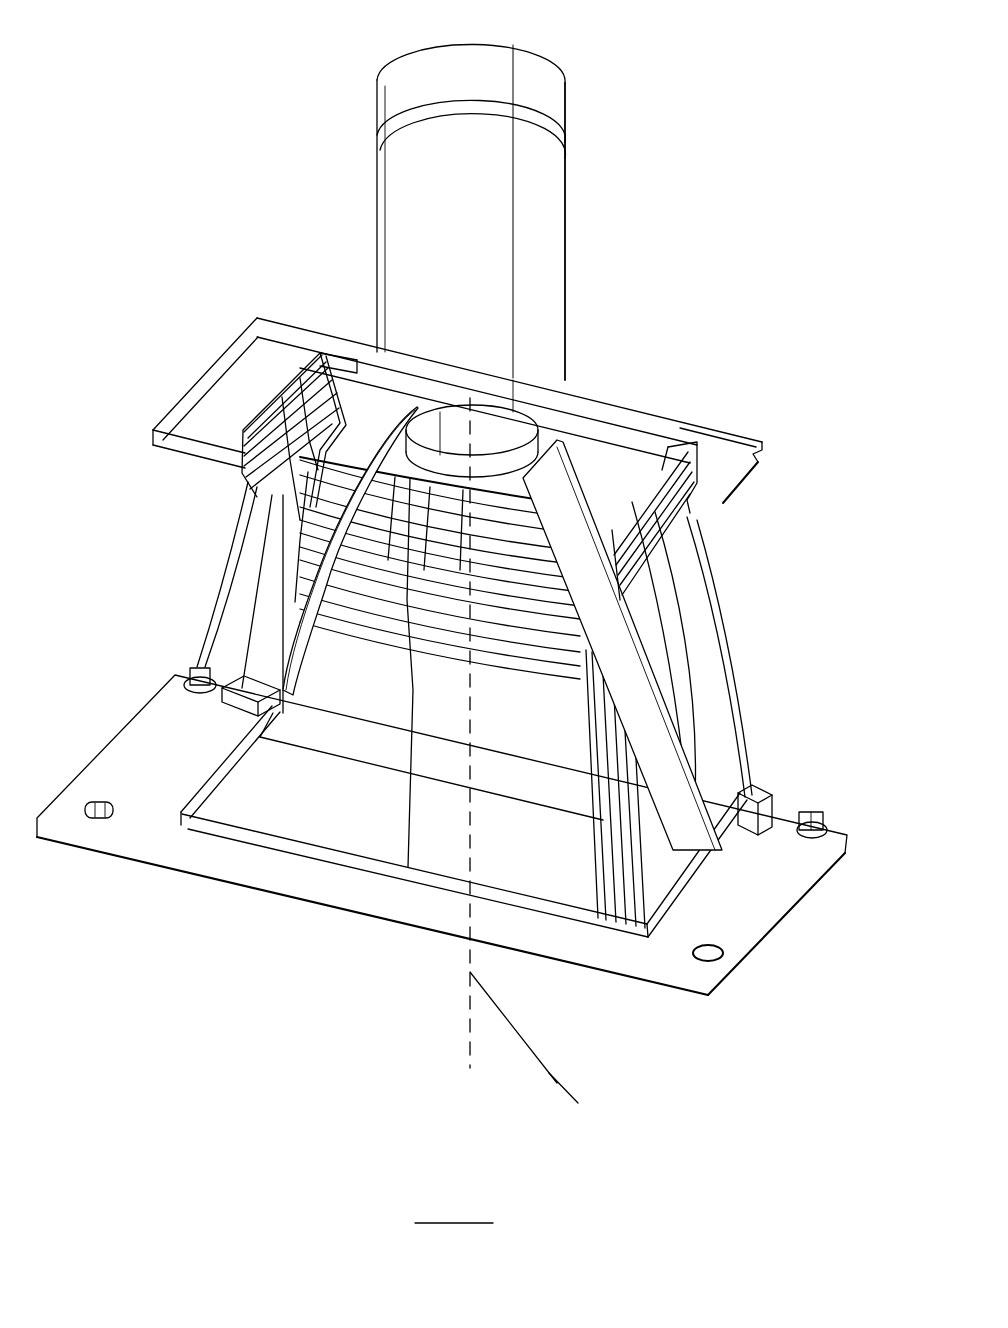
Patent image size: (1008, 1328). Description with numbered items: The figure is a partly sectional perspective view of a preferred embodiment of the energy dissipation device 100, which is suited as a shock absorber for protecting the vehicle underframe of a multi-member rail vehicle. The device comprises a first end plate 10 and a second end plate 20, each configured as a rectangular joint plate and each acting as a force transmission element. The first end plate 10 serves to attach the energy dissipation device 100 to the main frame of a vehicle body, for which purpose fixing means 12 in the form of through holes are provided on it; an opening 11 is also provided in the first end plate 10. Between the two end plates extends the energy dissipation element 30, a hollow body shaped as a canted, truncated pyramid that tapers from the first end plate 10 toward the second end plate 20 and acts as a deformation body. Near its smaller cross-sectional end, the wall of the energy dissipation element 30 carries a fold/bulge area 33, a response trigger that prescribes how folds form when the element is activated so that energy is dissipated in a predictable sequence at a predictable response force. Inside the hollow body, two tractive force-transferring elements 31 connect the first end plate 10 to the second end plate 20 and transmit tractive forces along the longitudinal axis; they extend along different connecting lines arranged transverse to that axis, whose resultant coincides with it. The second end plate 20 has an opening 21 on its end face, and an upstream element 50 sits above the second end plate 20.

The energy dissipation device 100 is at (124, 144).
The upstream element 50 is at (552, 255).
The second end plate 20 is at (720, 473).
The opening in second end plate 21 is at (533, 427).
The energy dissipation element 30 is at (678, 590).
The tractive force-transferring element 31 is at (630, 670).
The fold/bulge area 33 is at (247, 486).
The first end plate 10 is at (733, 885).
The opening in first end plate 11 is at (272, 828).
The fixing means 12 is at (712, 958).